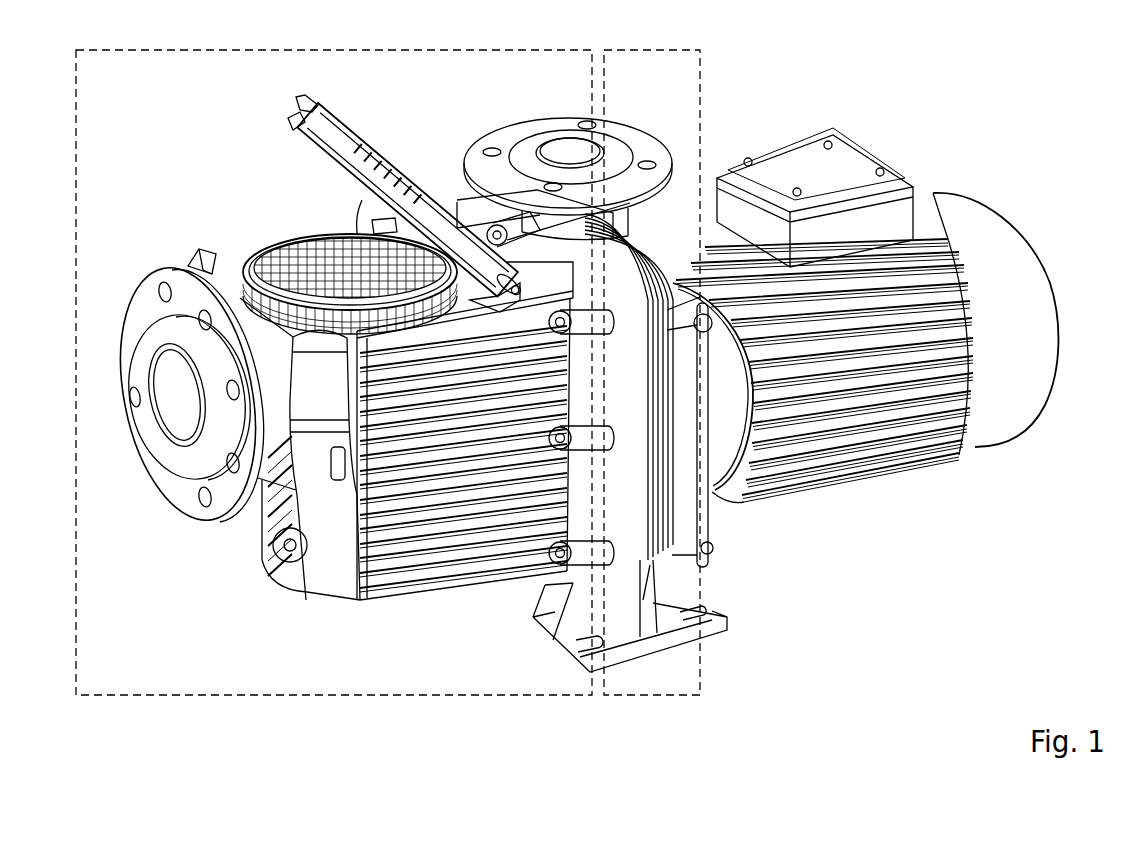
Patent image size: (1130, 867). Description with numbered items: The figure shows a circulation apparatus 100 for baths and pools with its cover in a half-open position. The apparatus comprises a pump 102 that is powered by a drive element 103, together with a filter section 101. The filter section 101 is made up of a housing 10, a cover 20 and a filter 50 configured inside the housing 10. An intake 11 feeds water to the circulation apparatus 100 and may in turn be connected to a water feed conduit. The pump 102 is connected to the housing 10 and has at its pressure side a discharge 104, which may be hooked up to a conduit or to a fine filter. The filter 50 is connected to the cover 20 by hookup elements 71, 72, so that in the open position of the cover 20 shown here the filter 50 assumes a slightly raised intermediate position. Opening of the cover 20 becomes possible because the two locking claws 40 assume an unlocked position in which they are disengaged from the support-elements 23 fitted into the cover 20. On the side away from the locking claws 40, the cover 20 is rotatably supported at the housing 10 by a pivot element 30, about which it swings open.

The housing 10 is at (287, 588).
The intake 11 is at (183, 418).
The cover 20 is at (335, 140).
The support-elements 23 is at (320, 106).
The pivot element 30 is at (517, 292).
The locking claws 40 is at (190, 248).
The filter 50 is at (273, 250).
The hookup element 71 is at (357, 227).
The hookup element 72 is at (359, 216).
The circulation apparatus 100 is at (843, 613).
The filter section 101 is at (343, 697).
The pump 102 is at (682, 698).
The drive element 103 is at (980, 210).
The discharge 104 is at (637, 137).